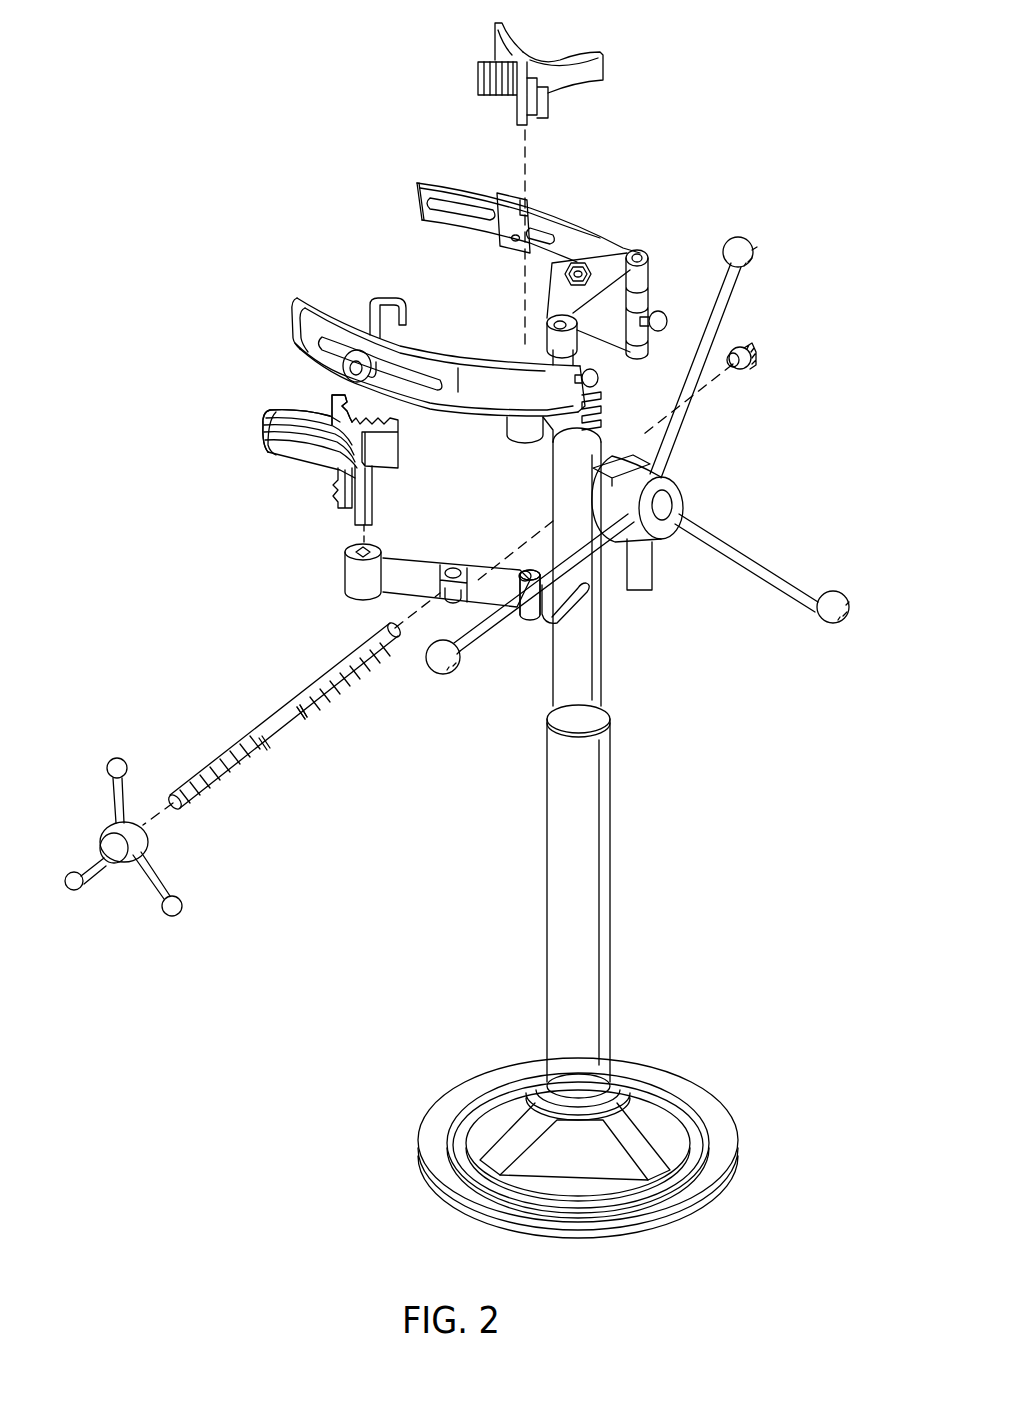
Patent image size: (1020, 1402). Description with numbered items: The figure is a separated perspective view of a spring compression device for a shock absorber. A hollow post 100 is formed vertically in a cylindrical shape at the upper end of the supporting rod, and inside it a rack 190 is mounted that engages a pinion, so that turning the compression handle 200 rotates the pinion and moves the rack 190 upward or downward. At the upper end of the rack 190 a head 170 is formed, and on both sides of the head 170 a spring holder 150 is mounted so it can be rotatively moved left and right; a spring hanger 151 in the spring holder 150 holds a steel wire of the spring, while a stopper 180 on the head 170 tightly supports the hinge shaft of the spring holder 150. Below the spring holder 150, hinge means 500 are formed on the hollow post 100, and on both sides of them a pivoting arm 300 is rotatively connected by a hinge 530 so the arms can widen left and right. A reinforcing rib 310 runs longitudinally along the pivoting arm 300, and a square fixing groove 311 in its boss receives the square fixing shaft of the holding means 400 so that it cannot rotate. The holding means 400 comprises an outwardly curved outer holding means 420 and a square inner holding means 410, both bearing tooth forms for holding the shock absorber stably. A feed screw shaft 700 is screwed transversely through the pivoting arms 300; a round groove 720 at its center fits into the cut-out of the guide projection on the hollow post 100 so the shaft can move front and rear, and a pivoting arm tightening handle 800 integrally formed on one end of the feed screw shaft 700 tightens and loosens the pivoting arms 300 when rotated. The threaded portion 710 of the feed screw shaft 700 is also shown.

The hollow post 100 is at (590, 670).
The spring holder 150 is at (297, 317).
The spring hanger 151 is at (382, 298).
The head 170 is at (607, 273).
The stopper 180 is at (660, 312).
The rack 190 is at (603, 410).
The compression handle 200 is at (750, 563).
The pivoting arm 300 is at (387, 592).
The reinforcing rib 310 is at (343, 567).
The fixing groove 311 is at (360, 550).
The holding means 400 is at (575, 43).
The inner holding means 410 is at (333, 405).
The outer holding means 420 is at (263, 435).
The hinge means 500 is at (545, 558).
The hinge 530 is at (523, 568).
The feed screw shaft 700 is at (277, 752).
The threaded portion 710 is at (185, 783).
The groove 720 is at (297, 713).
The pivoting arm tightening handle 800 is at (75, 892).